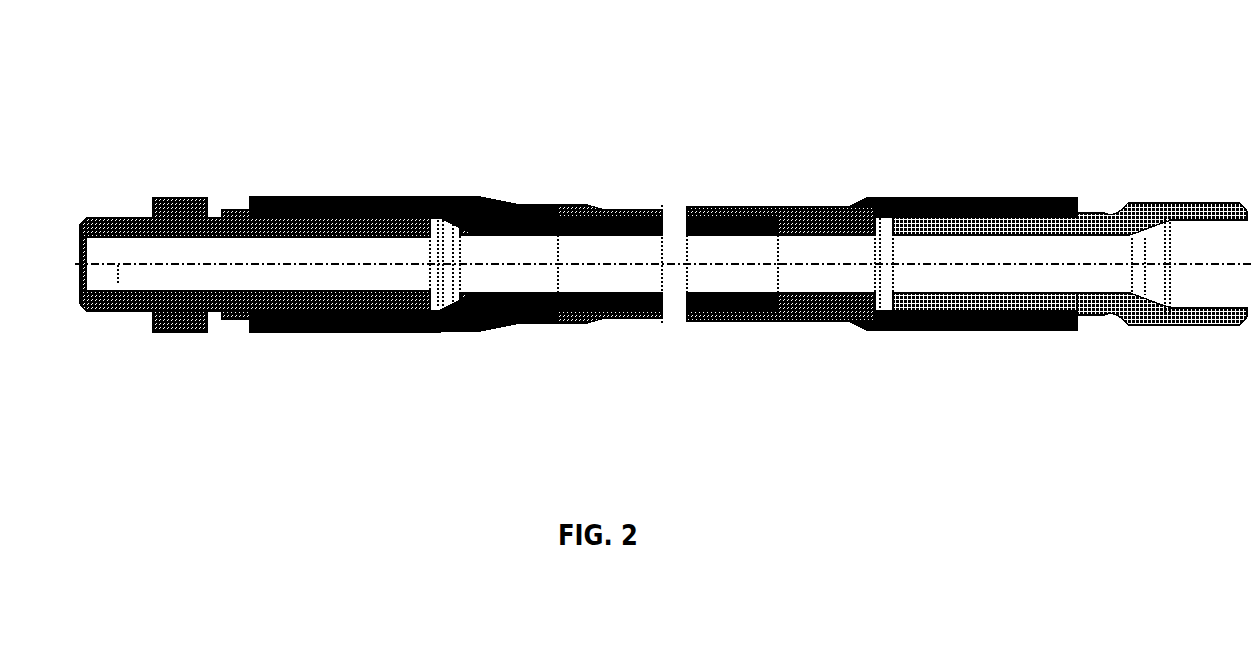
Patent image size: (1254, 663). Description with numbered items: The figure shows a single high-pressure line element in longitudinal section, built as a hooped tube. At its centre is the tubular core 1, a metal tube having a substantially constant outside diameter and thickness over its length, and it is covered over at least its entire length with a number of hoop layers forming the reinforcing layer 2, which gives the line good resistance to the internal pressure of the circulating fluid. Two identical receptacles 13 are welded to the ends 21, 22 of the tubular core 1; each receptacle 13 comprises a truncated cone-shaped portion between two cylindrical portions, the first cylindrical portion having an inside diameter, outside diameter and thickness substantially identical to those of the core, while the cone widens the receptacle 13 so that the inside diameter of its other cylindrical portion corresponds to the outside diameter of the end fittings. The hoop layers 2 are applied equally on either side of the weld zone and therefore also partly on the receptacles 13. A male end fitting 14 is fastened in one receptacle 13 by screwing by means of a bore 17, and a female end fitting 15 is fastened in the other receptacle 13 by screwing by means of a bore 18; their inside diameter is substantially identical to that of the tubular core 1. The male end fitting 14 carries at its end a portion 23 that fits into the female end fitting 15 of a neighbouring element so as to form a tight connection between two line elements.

The tubular core 1 is at (707, 207).
The reinforcing layer 2 is at (619, 192).
The receptacle 13 is at (462, 202).
The male end fitting 14 is at (221, 205).
The female end fitting 15 is at (1170, 187).
The bore 17 is at (421, 335).
The bore 18 is at (914, 318).
The end of tubular core 21 is at (552, 234).
The end of tubular core 22 is at (777, 219).
The portion of male end fitting 23 is at (112, 321).